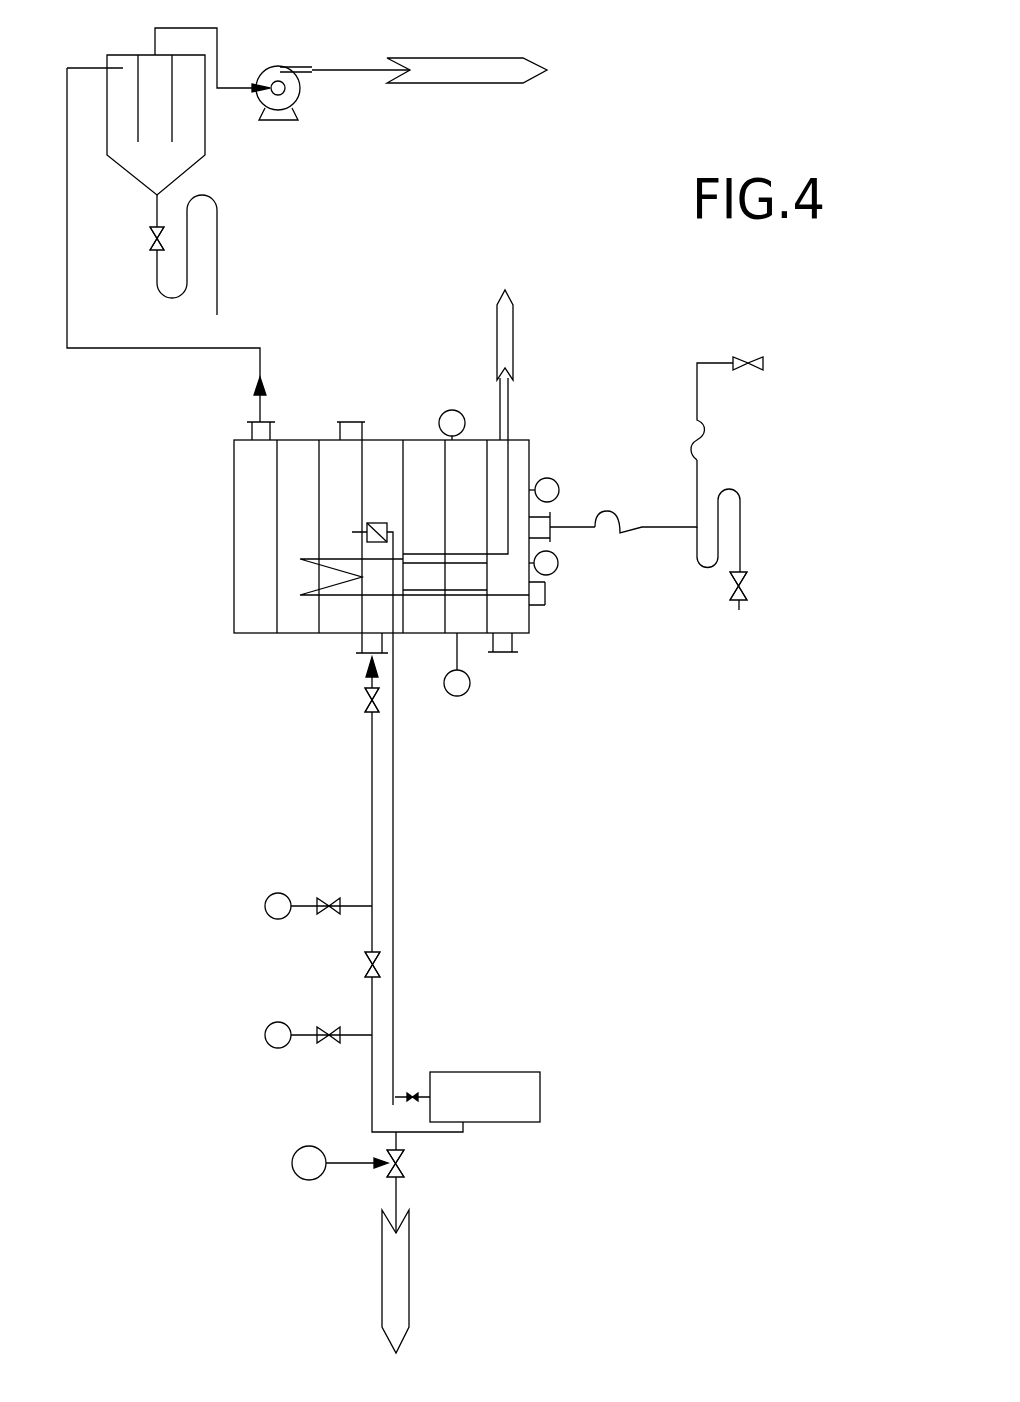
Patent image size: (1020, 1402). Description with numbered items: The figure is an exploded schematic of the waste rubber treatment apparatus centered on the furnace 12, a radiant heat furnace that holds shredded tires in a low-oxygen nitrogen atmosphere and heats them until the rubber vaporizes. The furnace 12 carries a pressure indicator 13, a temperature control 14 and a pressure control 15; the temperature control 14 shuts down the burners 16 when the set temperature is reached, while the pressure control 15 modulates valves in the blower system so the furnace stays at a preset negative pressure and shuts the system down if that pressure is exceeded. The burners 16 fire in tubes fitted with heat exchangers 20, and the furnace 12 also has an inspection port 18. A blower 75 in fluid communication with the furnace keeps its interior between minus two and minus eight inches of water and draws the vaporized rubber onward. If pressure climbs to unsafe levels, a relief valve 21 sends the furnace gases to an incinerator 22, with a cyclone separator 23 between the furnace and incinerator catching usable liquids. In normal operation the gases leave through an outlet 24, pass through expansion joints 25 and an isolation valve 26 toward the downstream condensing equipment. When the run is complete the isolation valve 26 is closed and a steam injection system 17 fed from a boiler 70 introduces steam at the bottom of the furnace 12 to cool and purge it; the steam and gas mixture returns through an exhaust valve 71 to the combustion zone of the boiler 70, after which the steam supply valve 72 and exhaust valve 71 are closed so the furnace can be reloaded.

The furnace 12 is at (224, 596).
The pressure indicator 13 is at (462, 695).
The temperature control 14 is at (560, 566).
The pressure control 15 is at (553, 480).
The burners 16 is at (537, 612).
The steam injection system 17 is at (372, 805).
The inspection port 18 is at (357, 422).
The heat exchangers 20 is at (460, 557).
The relief valve 21 is at (272, 422).
The incinerator 22 is at (513, 83).
The cyclone separator 23 is at (175, 165).
The outlet 24 is at (553, 520).
The expansion joints 25 is at (627, 535).
The isolation valve 26 is at (763, 363).
The boiler 70 is at (540, 1073).
The exhaust valve 71 is at (377, 522).
The steam supply valve 72 is at (367, 700).
The blower 75 is at (277, 65).